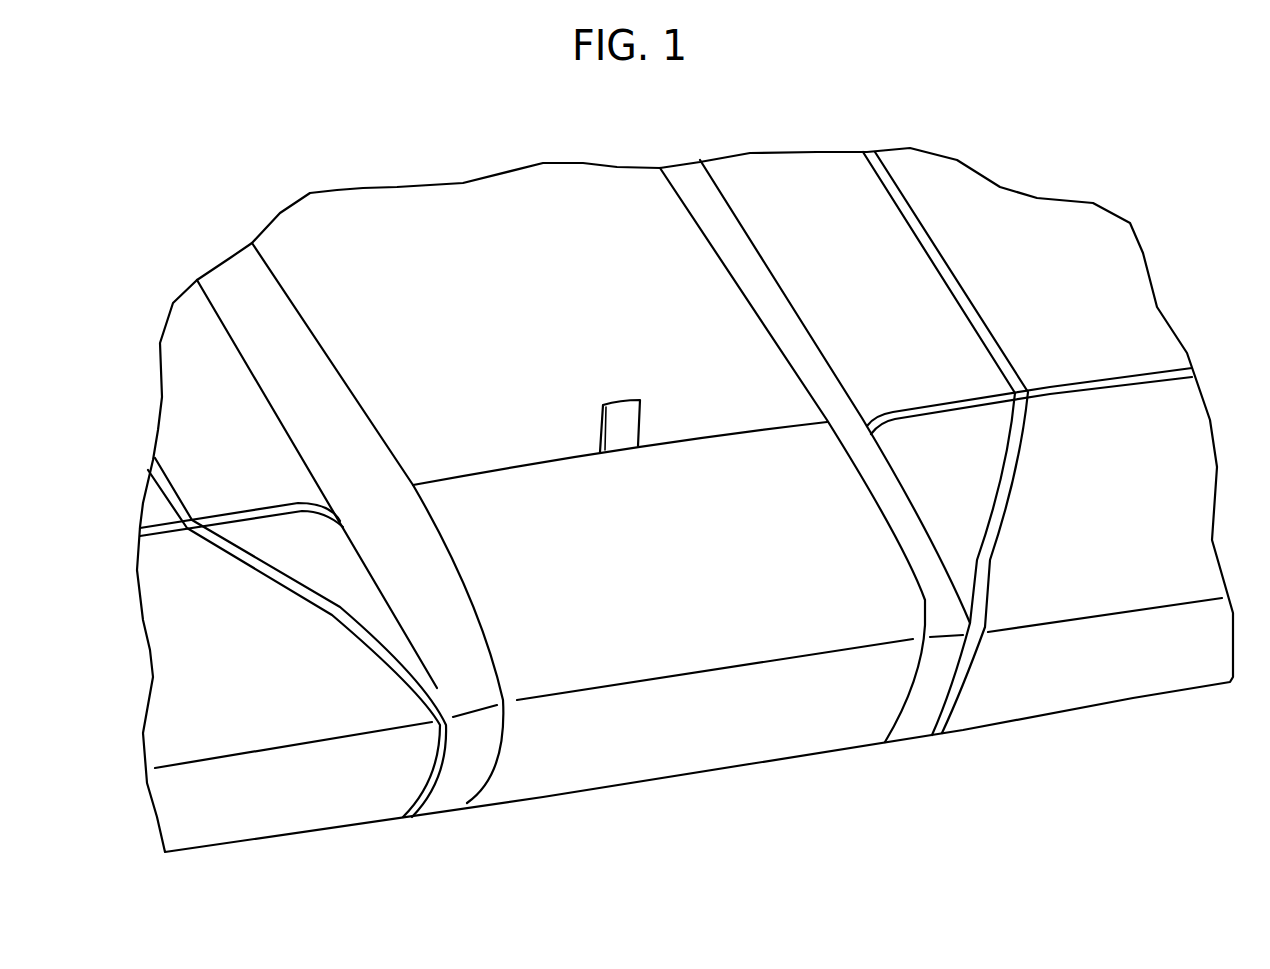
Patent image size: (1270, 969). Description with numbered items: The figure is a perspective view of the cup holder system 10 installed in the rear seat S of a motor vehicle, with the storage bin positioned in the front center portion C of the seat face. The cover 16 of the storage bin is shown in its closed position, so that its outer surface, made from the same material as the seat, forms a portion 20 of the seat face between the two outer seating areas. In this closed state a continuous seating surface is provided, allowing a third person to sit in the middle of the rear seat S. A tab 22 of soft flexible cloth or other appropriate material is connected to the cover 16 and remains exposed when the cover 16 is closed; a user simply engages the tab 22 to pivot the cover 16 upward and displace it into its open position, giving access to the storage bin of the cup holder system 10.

The cup holder system 10 is at (874, 766).
The cover 16 is at (513, 462).
The portion of the seat face 20 is at (633, 645).
The tab 22 is at (627, 405).
The front center portion C is at (377, 267).
The rear seat S is at (898, 242).